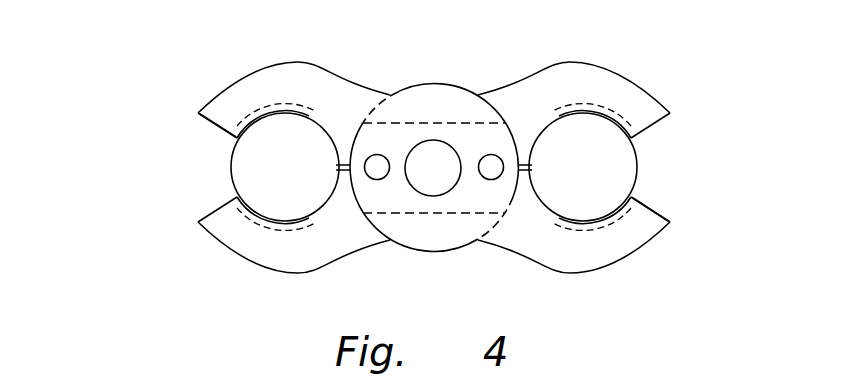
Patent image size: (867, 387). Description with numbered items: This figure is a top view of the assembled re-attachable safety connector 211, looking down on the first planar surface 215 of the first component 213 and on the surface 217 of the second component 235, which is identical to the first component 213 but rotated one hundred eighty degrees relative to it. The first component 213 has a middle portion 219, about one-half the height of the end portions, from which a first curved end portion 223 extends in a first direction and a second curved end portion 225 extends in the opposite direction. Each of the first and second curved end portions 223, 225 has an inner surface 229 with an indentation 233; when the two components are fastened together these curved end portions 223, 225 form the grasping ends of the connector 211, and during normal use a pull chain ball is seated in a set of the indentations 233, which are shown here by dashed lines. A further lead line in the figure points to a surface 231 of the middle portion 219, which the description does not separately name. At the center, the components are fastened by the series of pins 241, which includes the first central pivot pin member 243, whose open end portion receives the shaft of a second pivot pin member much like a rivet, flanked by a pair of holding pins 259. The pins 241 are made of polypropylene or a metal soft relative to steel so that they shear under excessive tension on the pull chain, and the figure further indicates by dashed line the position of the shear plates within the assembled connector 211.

The re-attachable safety connector 211 is at (100, 53).
The first component 213 is at (215, 133).
The first planar surface 215 is at (223, 105).
The biplanar surface 217 is at (230, 236).
The middle portion 219 is at (505, 263).
The first curved end portion 223 is at (350, 263).
The second curved end portion 225 is at (680, 263).
The inner surface 229 is at (258, 117).
The body surface 231 is at (367, 136).
The indentation 233 is at (298, 115).
The second component 235 is at (663, 217).
The series of pins 241 is at (357, 57).
The first central pivot pin member 243 is at (436, 140).
The holding pins 259 is at (491, 155).